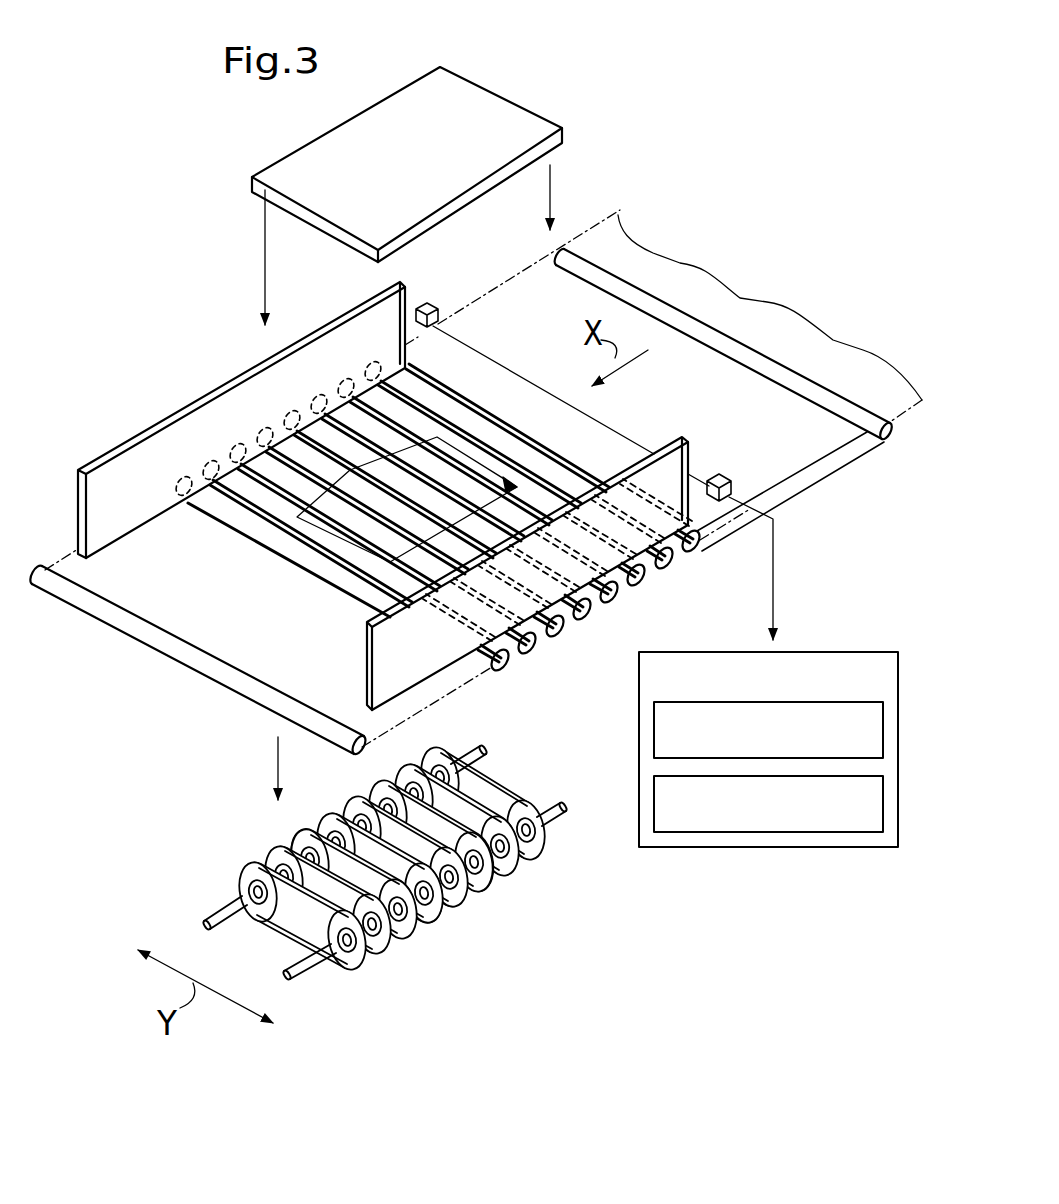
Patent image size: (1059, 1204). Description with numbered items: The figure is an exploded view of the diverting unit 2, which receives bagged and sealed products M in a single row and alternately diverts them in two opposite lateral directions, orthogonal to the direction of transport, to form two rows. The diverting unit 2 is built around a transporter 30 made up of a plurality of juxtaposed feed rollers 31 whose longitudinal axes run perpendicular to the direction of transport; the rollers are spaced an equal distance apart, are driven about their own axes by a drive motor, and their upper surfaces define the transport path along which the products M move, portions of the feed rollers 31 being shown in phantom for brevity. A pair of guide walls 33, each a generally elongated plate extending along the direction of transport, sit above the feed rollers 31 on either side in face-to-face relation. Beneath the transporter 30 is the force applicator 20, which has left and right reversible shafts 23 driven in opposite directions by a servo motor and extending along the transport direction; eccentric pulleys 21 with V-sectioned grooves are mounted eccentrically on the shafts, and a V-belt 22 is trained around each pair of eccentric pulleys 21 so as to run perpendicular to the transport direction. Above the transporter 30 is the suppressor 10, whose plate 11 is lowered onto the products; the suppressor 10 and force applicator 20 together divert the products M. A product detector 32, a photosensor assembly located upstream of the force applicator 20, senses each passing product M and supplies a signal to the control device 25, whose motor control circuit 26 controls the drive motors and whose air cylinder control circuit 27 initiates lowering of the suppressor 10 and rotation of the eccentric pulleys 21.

The diverting unit 2 is at (699, 243).
The suppressor 10 is at (545, 88).
The pressing plate 11 is at (563, 128).
The force applicator 20 is at (498, 913).
The eccentric pulley 21 is at (385, 952).
The V-belt 22 is at (320, 833).
The reversible shaft 23 is at (562, 798).
The control device 25 is at (823, 652).
The motor control circuit 26 is at (654, 745).
The air cylinder control circuit 27 is at (654, 812).
The transporter 30 is at (180, 588).
The feed roller 31 is at (643, 588).
The product detector 32 is at (723, 477).
The guide wall 33 is at (223, 387).
The bagged and sealed product M is at (352, 466).